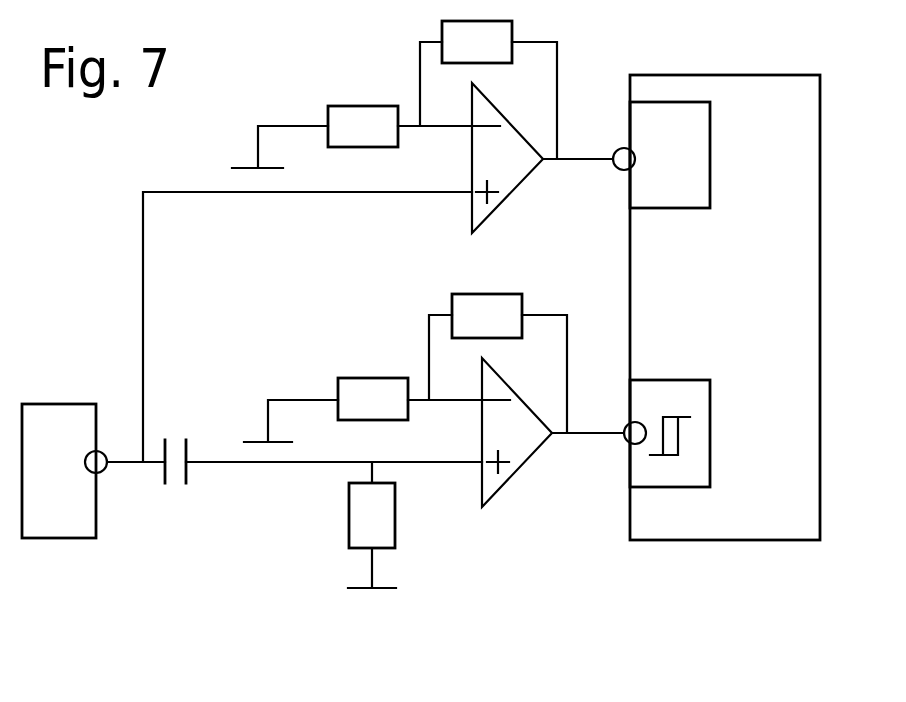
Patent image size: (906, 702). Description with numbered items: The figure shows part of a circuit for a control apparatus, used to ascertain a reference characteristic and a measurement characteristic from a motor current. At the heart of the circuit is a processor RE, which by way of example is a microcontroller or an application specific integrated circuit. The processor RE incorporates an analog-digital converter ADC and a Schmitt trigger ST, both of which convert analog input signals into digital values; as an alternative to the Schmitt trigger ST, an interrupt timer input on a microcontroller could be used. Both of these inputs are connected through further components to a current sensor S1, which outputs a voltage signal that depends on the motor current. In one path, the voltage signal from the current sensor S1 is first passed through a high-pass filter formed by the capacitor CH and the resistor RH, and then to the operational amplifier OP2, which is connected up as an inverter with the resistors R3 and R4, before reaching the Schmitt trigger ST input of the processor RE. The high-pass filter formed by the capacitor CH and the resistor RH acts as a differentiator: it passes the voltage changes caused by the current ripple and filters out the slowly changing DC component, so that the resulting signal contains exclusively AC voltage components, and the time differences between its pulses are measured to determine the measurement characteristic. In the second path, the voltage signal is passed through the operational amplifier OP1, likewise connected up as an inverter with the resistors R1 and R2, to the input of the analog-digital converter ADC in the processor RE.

The current sensor S1 is at (64, 471).
The capacitor CH is at (166, 494).
The resistor RH is at (387, 535).
The resistor R1 is at (488, 90).
The resistor R2 is at (366, 137).
The resistor R3 is at (498, 363).
The resistor R4 is at (377, 410).
The operational amplifier OP1 is at (510, 168).
The operational amplifier OP2 is at (517, 445).
The analog-digital converter ADC is at (661, 155).
The Schmitt trigger ST is at (668, 393).
The processor RE is at (725, 307).